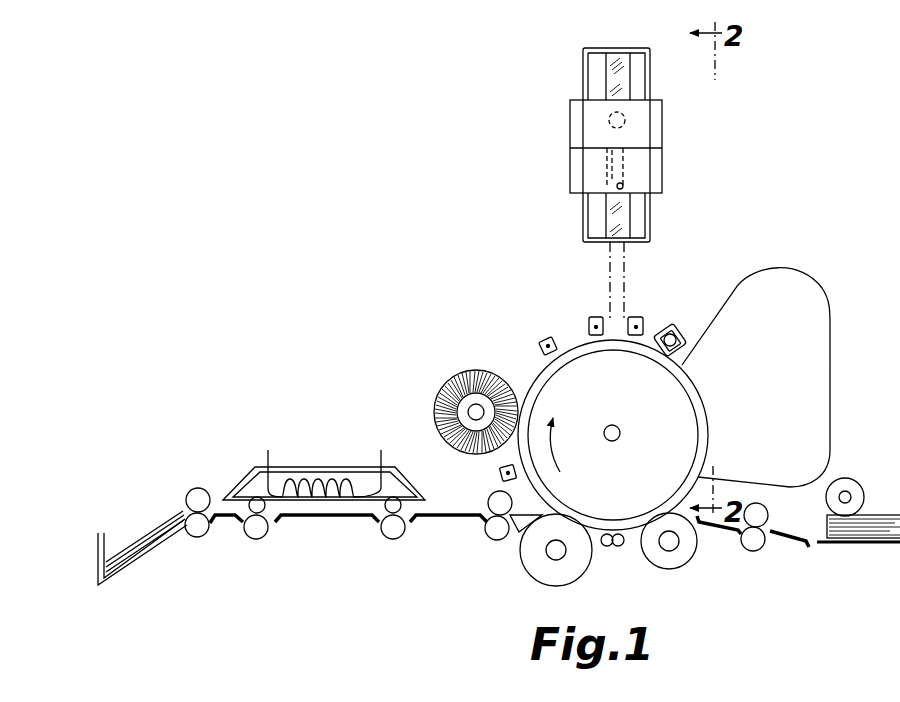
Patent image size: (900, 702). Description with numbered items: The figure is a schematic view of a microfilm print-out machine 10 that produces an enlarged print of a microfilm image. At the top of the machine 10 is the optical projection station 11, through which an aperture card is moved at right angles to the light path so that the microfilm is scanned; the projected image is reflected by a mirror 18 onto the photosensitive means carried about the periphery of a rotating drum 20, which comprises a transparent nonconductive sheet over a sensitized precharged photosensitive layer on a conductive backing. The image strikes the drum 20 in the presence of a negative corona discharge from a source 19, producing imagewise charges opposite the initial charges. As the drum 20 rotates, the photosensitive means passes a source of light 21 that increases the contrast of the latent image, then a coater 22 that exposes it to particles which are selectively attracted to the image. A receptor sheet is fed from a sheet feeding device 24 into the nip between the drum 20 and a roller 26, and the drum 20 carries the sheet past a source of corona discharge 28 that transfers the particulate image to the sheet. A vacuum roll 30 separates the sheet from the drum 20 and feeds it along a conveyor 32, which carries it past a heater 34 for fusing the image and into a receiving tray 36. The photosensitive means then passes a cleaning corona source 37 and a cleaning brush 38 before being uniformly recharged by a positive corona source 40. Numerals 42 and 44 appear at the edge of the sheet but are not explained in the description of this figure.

The microfilm print-out machine 10 is at (441, 322).
The optical projection station 11 is at (681, 133).
The mirror 18 is at (612, 70).
The source of negative corona discharge 19 is at (635, 317).
The rotating drum 20 is at (670, 449).
The source of light 21 is at (677, 327).
The coater 22 is at (780, 369).
The sheet feeding device 24 is at (808, 556).
The roller 26 is at (670, 564).
The source of corona discharge 28 is at (618, 548).
The vacuum roll 30 is at (538, 573).
The conveyor 32 is at (392, 544).
The heater 34 is at (332, 490).
The receiving tray 36 is at (148, 556).
The cleaning corona source 37 is at (500, 473).
The cleaning brush 38 is at (446, 385).
The positive corona source 40 is at (546, 338).
The element 42 is at (885, 120).
The element 44 is at (899, 150).